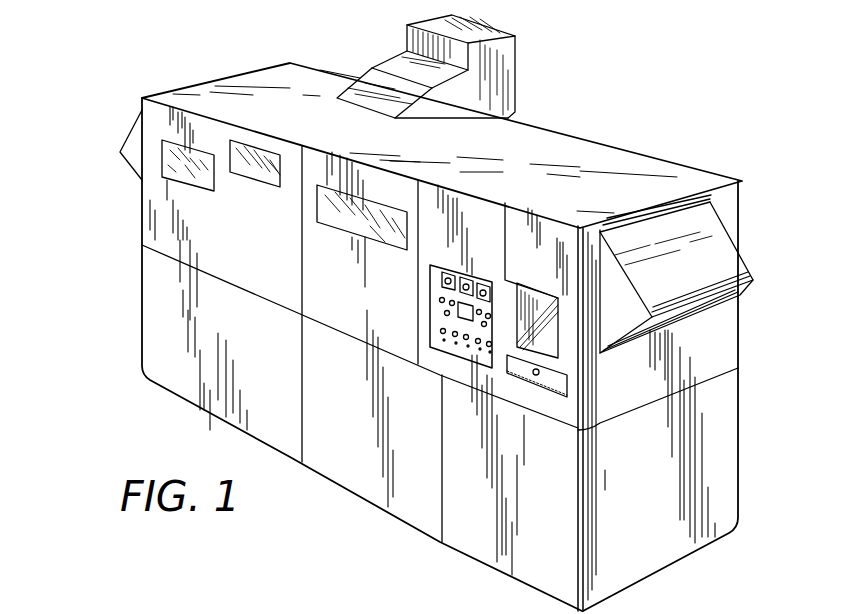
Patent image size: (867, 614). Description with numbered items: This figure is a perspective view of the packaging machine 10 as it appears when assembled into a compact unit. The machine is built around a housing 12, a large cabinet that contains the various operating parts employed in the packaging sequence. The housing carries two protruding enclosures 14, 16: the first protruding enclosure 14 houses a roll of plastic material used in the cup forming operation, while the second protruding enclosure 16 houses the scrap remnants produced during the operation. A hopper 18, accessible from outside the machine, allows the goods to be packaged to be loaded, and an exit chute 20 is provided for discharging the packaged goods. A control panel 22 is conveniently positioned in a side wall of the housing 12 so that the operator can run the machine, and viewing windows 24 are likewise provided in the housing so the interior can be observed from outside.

The packaging machine 10 is at (95, 214).
The housing 12 is at (190, 385).
The protruding enclosure 14 is at (133, 128).
The protruding enclosure 16 is at (722, 240).
The hopper 18 is at (505, 72).
The exit chute 20 is at (536, 330).
The control panel 22 is at (442, 318).
The viewing windows 24 is at (262, 168).